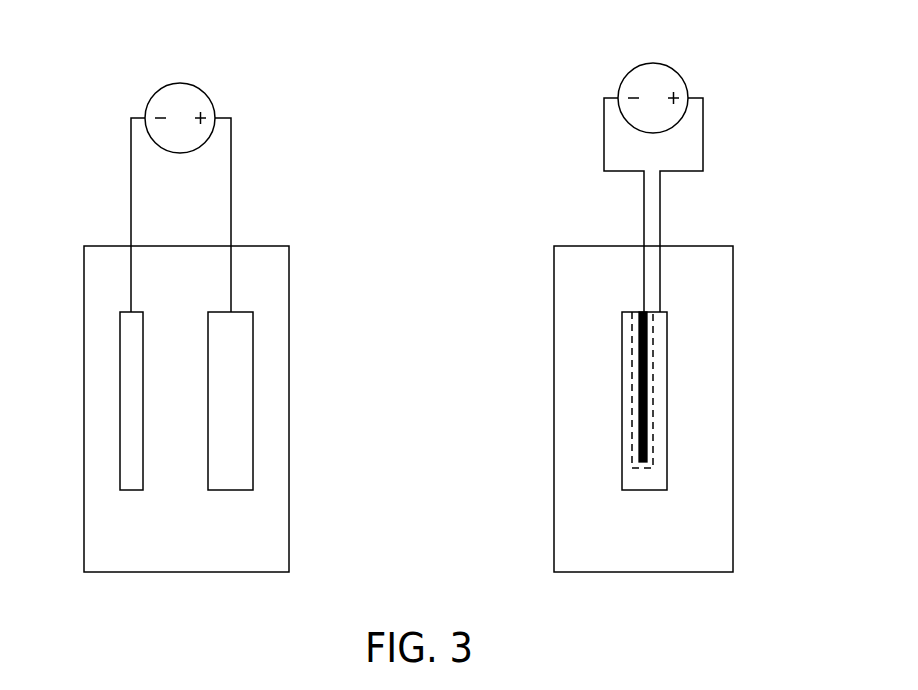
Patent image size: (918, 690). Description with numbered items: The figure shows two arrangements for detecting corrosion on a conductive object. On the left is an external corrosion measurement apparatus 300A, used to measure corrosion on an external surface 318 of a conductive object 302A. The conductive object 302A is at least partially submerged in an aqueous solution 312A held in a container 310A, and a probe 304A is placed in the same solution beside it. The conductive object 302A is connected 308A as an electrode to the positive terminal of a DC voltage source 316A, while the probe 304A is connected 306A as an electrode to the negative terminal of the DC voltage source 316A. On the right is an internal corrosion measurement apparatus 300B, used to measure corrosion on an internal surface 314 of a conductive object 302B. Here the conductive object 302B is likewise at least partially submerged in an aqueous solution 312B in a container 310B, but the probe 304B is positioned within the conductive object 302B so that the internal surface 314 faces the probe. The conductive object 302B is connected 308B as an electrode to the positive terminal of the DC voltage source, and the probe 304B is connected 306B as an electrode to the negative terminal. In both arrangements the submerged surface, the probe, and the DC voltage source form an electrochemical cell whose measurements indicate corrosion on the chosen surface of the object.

The external corrosion measurement apparatus 300A is at (252, 68).
The internal corrosion measurement apparatus 300B is at (725, 47).
The conductive object 302A is at (253, 342).
The conductive object 302B is at (667, 375).
The probe 304A is at (120, 342).
The probe 304B is at (639, 341).
The probe connection 306A is at (131, 200).
The probe connection 306B is at (644, 200).
The conductive object connection 308A is at (231, 200).
The conductive object connection 308B is at (660, 200).
The container 310A is at (289, 548).
The container 310B is at (733, 548).
The aqueous solution 312A is at (152, 555).
The aqueous solution 312B is at (622, 555).
The internal surface 314 is at (653, 440).
The DC voltage source 316A is at (180, 83).
The external surface 318 is at (207, 445).